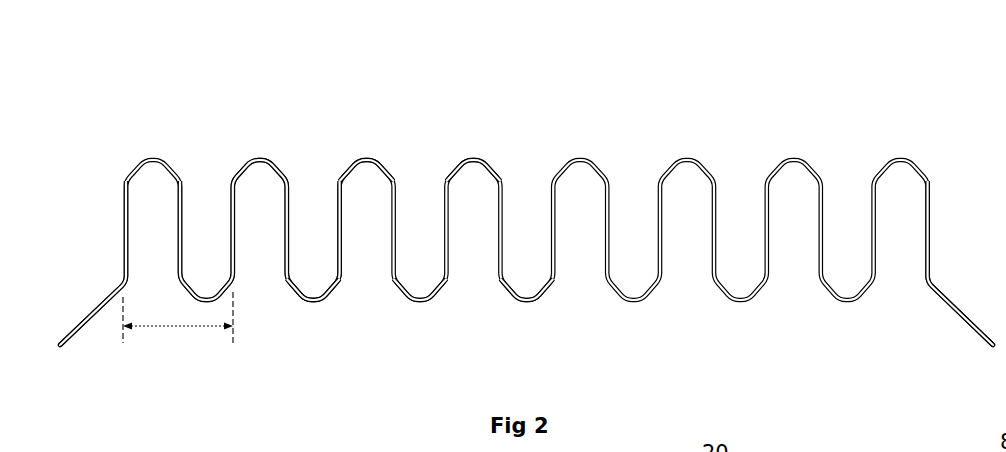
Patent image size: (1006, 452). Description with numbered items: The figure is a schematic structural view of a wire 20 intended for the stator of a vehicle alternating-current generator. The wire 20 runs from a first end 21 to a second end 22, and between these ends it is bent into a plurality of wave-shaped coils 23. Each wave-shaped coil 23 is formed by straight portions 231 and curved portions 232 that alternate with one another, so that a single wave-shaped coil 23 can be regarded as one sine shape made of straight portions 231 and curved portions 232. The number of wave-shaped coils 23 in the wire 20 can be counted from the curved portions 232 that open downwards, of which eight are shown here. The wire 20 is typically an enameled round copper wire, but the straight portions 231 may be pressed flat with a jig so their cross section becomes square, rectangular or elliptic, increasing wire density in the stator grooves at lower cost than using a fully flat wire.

The wire 20 is at (552, 124).
The first end 21 is at (72, 334).
The second end 22 is at (963, 320).
The wave-shaped coil 23 is at (178, 327).
The straight portion 231 is at (334, 214).
The curved portion 232 is at (467, 158).